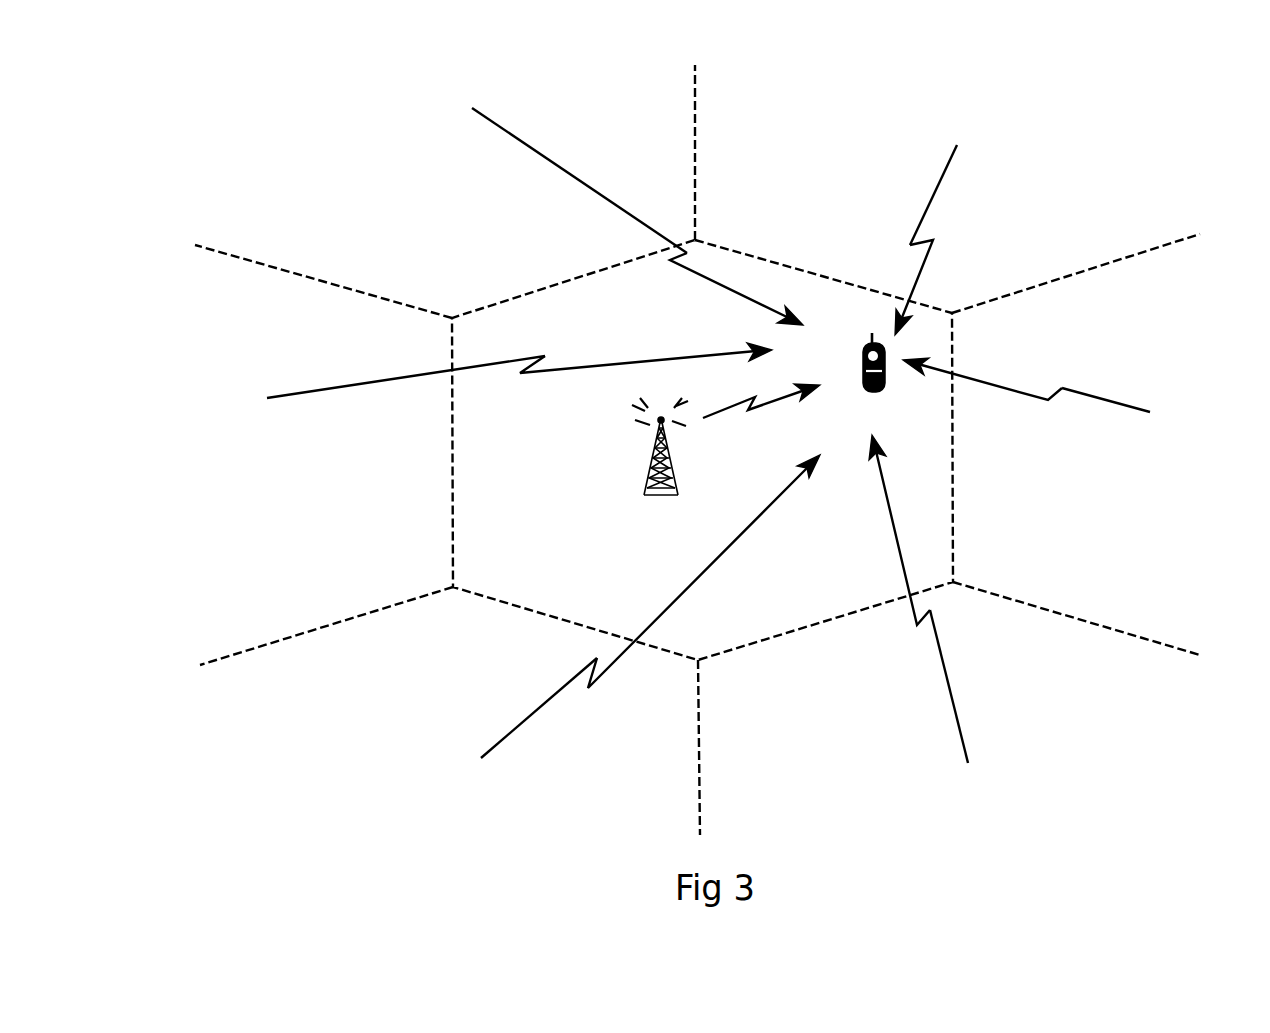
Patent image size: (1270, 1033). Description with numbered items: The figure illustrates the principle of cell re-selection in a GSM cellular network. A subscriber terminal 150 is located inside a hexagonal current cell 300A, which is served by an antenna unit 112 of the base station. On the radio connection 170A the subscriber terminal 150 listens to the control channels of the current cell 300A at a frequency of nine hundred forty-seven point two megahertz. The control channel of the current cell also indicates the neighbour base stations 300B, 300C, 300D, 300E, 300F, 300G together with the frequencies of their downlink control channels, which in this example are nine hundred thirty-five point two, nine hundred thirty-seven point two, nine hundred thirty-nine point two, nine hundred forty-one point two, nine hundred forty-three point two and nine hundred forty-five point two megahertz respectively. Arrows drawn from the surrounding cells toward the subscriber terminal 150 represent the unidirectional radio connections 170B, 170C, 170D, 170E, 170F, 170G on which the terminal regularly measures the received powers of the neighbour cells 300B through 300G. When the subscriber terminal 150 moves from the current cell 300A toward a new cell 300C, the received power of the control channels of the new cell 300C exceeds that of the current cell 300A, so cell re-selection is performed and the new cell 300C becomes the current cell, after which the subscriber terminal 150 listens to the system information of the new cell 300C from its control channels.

The antenna unit 112 is at (660, 496).
The subscriber terminal 150 is at (863, 378).
The radio connection 170A is at (788, 400).
The unidirectional radio connection 170B is at (934, 240).
The unidirectional radio connection 170C is at (1062, 389).
The unidirectional radio connection 170D is at (917, 625).
The unidirectional radio connection 170E is at (590, 668).
The unidirectional radio connection 170F is at (530, 357).
The unidirectional radio connection 170G is at (678, 262).
The current cell 300A is at (612, 468).
The neighbour base station 300B is at (984, 155).
The neighbour base station 300C is at (1160, 420).
The neighbour base station 300D is at (991, 719).
The neighbour base station 300E is at (493, 735).
The neighbour base station 300F is at (352, 402).
The neighbour base station 300G is at (524, 153).